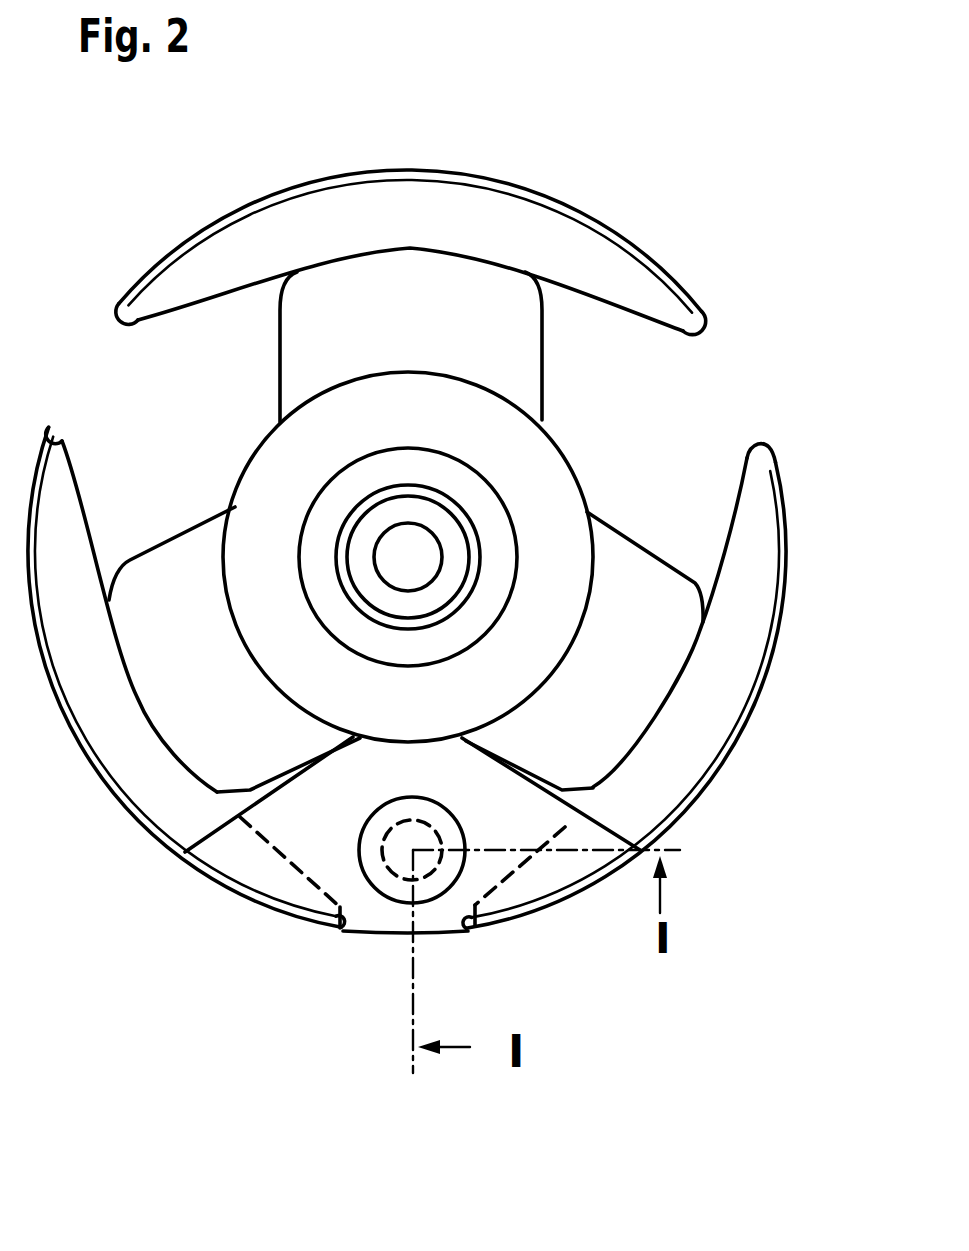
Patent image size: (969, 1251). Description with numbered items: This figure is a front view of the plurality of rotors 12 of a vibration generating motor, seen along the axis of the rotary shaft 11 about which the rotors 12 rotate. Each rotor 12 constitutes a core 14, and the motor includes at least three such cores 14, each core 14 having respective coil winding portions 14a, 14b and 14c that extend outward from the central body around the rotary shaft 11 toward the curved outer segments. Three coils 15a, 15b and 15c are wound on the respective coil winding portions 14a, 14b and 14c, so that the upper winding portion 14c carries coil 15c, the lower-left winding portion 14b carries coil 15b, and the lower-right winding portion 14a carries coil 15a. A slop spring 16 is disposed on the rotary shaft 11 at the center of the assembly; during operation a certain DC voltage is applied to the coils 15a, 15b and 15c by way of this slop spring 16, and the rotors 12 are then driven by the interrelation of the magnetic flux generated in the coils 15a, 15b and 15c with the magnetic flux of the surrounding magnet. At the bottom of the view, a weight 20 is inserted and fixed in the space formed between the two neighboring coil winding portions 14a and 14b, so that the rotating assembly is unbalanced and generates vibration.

The rotary shaft 11 is at (412, 538).
The rotor 12 is at (679, 278).
The core 14 is at (590, 208).
The coil winding portion 14a is at (730, 695).
The coil winding portion 14b is at (110, 753).
The coil winding portion 14c is at (320, 205).
The coil 15a is at (628, 545).
The coil 15b is at (173, 553).
The coil 15c is at (288, 342).
The slop spring 16 is at (460, 505).
The weight 20 is at (388, 932).